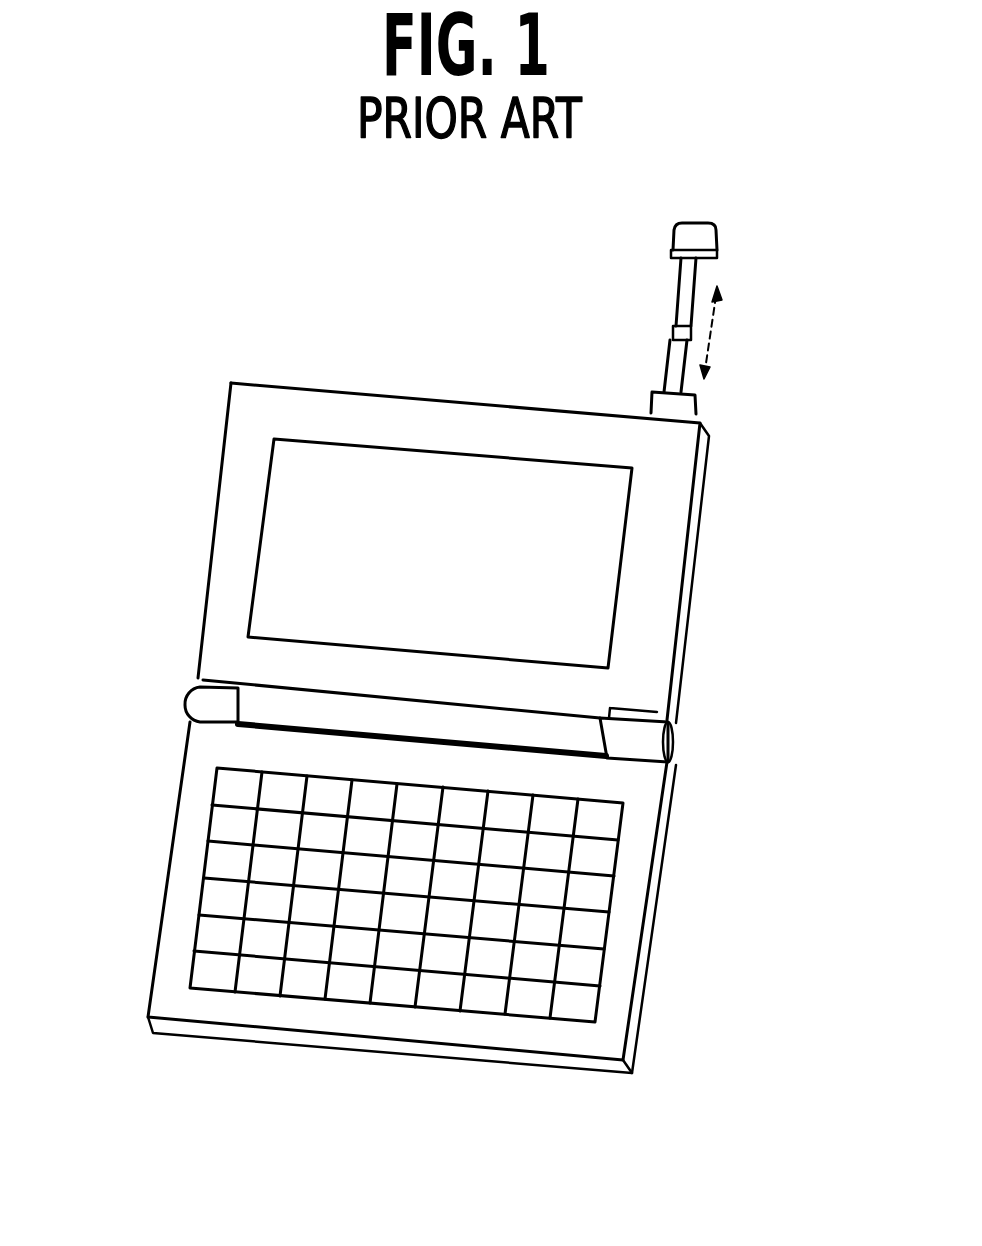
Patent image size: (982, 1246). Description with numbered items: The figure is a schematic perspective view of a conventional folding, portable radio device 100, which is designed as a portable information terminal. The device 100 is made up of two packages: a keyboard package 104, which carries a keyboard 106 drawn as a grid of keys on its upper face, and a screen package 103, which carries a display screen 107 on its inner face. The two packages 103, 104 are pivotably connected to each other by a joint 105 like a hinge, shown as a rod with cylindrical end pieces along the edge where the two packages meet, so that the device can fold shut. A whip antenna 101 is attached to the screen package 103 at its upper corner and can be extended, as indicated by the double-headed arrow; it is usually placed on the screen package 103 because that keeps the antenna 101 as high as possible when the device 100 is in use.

The folding, portable radio device 100 is at (254, 332).
The whip antenna 101 is at (712, 245).
The screen package 103 is at (686, 589).
The keyboard package 104 is at (654, 898).
The joint 105 is at (672, 745).
The keyboard 106 is at (607, 973).
The display screen 107 is at (275, 560).